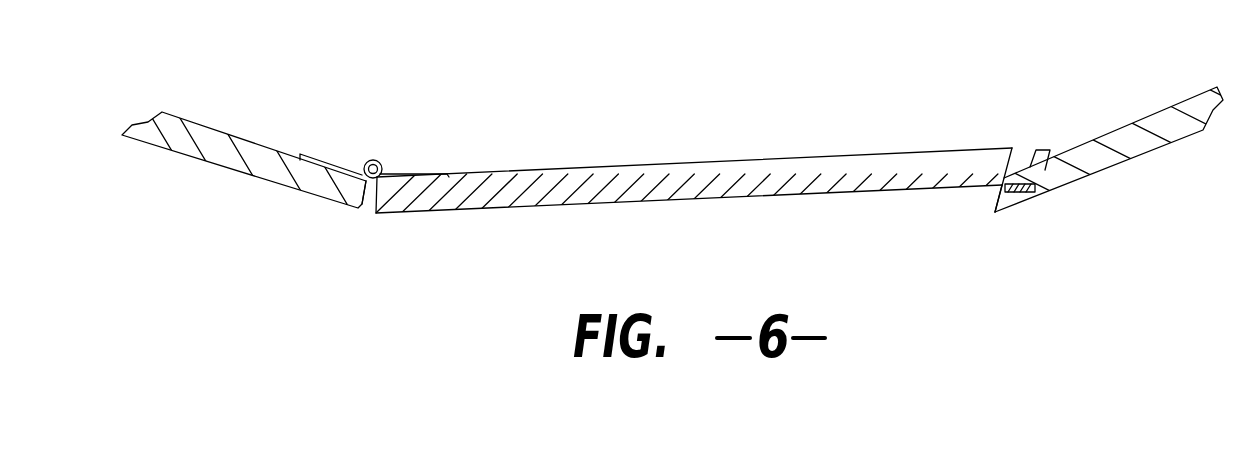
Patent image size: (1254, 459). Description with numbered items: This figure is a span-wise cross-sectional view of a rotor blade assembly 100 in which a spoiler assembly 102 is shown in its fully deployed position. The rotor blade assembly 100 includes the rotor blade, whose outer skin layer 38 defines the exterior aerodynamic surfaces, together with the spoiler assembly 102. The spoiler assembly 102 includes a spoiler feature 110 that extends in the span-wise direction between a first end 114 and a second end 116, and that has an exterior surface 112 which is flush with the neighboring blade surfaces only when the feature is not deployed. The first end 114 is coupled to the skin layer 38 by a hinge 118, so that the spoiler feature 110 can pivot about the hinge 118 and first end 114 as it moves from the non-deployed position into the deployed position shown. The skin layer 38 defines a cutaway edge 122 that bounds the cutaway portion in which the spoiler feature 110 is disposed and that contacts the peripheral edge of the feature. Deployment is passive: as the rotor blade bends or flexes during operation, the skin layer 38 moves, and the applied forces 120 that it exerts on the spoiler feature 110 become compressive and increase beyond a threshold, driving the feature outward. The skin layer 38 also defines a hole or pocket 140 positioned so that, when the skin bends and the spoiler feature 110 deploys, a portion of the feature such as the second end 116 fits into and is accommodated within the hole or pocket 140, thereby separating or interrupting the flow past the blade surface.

The rotor blade assembly 100 is at (296, 68).
The skin layer 38 is at (221, 157).
The hinge 118 is at (372, 152).
The spoiler assembly 102 is at (661, 120).
The spoiler feature 110 is at (758, 142).
The exterior surface 112 is at (572, 167).
The first end 114 is at (370, 180).
The cutaway edge 122 is at (364, 205).
The hole or pocket 140 is at (1037, 162).
The second end 116 is at (1027, 147).
The applied forces 120 is at (1034, 190).